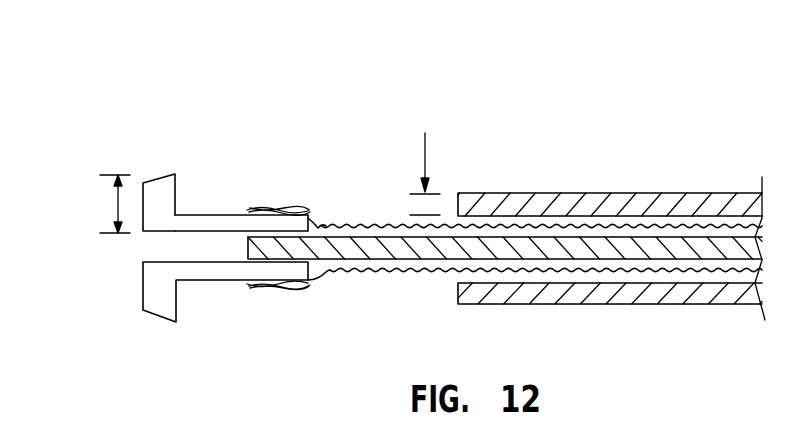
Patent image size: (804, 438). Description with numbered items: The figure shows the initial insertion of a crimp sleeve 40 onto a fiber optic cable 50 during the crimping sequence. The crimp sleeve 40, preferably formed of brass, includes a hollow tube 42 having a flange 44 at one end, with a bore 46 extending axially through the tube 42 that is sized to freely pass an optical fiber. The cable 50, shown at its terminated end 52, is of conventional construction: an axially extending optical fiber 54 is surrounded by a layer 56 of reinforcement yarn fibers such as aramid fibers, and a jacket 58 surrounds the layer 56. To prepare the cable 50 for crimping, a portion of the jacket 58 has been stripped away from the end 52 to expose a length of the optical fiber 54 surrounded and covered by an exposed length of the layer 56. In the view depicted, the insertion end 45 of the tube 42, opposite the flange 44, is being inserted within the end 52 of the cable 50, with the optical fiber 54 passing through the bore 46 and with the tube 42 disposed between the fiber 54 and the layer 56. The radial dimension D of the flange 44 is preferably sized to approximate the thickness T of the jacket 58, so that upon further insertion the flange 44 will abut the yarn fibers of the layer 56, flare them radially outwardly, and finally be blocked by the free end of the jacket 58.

The crimp sleeve 40 is at (160, 317).
The hollow tube 42 is at (213, 212).
The flange 44 is at (162, 175).
The insertion end 45 is at (318, 223).
The bore 46 is at (160, 237).
The fiber optic cable 50 is at (633, 157).
The terminated end 52 is at (252, 292).
The optical fiber 54 is at (353, 257).
The layer of reinforcement yarn fibers 56 is at (410, 270).
The jacket 58 is at (546, 193).
The radial dimension of the flange D is at (113, 202).
The thickness of the jacket T is at (427, 150).